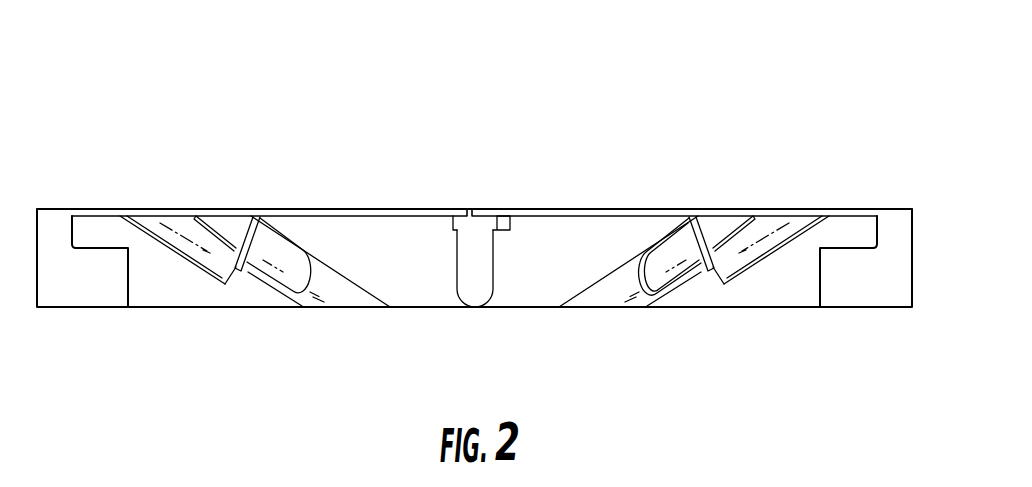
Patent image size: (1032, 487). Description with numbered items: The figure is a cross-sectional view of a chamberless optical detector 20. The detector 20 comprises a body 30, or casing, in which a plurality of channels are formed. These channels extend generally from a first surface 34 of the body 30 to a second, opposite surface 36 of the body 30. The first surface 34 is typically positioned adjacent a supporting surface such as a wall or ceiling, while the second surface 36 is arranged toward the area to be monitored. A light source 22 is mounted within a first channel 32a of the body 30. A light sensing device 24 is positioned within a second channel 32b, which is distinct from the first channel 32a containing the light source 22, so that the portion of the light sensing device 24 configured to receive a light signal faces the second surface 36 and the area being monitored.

The optical detector 20 is at (137, 147).
The light source 22 is at (262, 283).
The light sensing device 24 is at (677, 297).
The body 30 is at (553, 233).
The first channel 32a is at (338, 303).
The second channel 32b is at (607, 297).
The first surface 34 is at (385, 213).
The second surface 36 is at (405, 307).